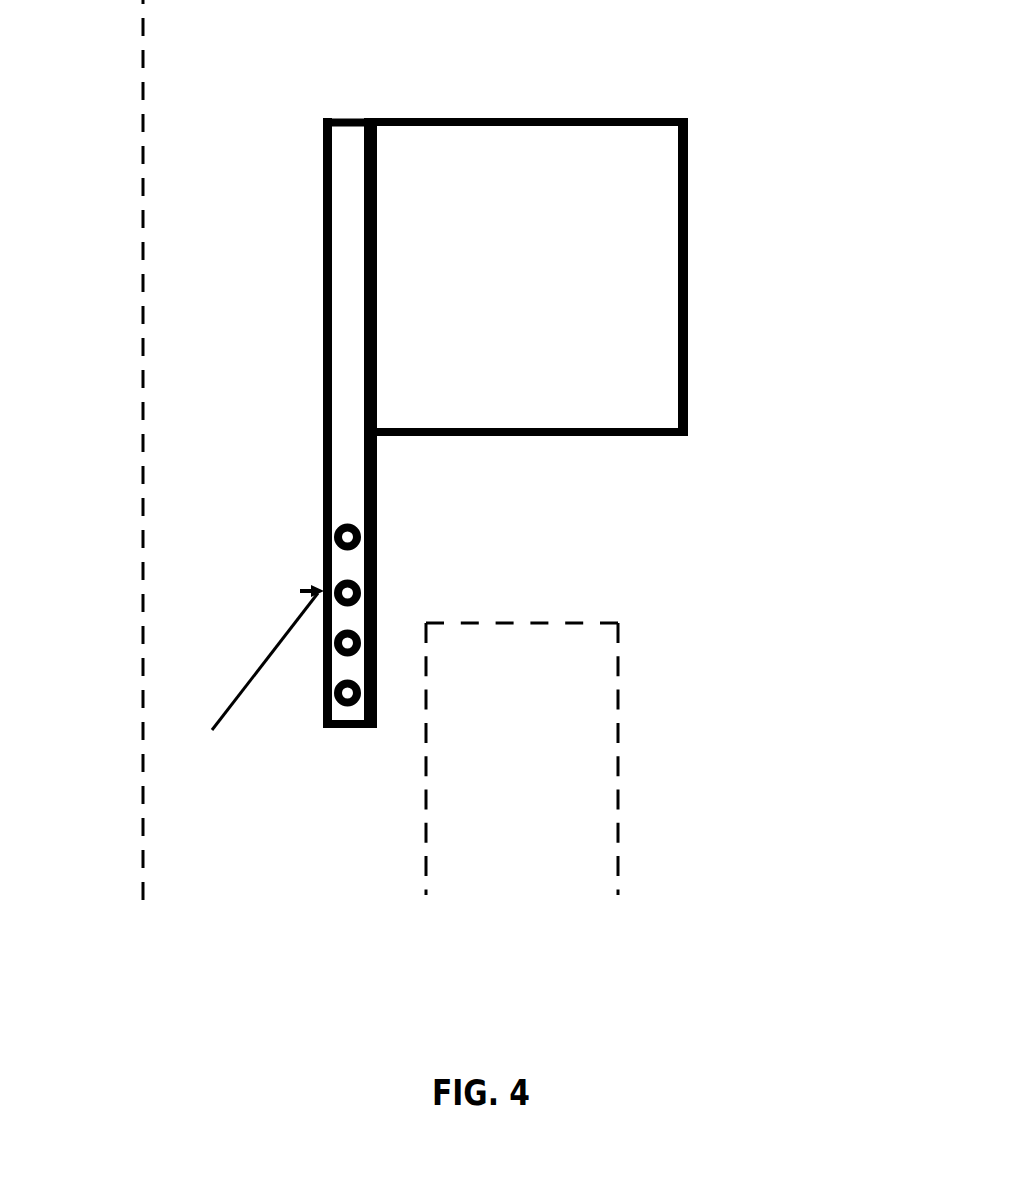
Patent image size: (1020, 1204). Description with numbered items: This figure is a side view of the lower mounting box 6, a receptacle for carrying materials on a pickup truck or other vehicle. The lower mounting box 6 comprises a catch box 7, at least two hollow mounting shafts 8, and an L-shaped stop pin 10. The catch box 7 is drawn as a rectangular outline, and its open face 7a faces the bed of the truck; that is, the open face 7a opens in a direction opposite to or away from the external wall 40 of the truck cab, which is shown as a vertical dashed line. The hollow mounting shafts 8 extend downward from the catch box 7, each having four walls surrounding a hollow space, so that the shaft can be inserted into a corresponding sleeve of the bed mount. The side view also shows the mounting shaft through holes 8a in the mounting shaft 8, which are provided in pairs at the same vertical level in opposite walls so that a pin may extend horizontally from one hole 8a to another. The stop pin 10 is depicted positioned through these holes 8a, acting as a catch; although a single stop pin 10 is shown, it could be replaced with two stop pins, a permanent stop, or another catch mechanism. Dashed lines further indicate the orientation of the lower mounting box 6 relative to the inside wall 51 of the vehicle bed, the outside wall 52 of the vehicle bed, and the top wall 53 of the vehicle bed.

The lower mounting box 6 is at (663, 90).
The catch box 7 is at (640, 370).
The open face 7a is at (688, 308).
The hollow mounting shaft 8 is at (286, 423).
The mounting shaft through holes 8a is at (340, 588).
The L-shaped stop pin 10 is at (252, 672).
The external wall of vehicle cab 40 is at (142, 822).
The inside wall of vehicle bed 51 is at (627, 885).
The outside wall of vehicle bed 52 is at (432, 883).
The top wall of vehicle bed 53 is at (477, 625).